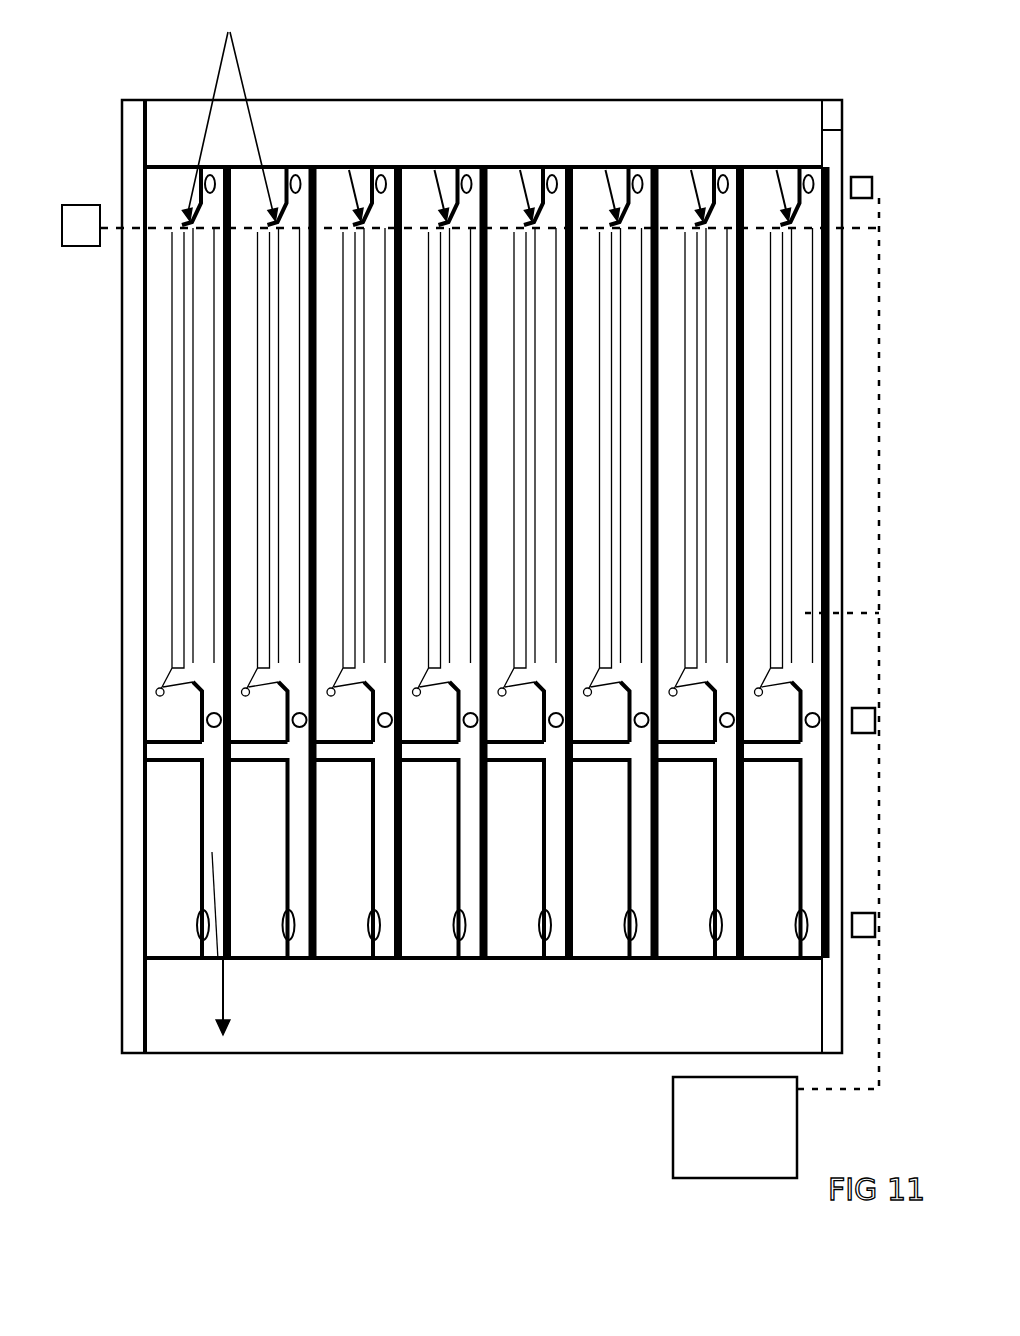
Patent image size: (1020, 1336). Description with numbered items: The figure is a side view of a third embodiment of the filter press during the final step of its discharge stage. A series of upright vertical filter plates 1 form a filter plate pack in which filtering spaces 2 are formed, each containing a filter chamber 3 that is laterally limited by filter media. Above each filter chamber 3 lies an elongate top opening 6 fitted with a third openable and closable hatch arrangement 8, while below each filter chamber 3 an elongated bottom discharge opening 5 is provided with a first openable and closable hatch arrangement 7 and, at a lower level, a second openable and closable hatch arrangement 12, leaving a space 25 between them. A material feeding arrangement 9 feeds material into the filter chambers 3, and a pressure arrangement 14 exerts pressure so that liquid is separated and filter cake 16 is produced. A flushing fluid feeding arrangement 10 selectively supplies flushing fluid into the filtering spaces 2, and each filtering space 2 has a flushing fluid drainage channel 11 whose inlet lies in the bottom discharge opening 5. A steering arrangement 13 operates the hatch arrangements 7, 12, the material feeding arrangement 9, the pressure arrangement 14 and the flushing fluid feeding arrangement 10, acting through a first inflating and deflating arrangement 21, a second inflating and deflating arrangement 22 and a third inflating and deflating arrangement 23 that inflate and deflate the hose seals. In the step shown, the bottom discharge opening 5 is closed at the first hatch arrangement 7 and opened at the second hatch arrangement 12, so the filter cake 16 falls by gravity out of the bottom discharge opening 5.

The filter plates 1 is at (229, 110).
The filtering space 2 is at (288, 243).
The filter chamber 3 is at (210, 335).
The elongated bottom discharge opening 5 is at (215, 938).
The elongate top opening 6 is at (387, 168).
The first openable and closable hatch arrangement 7 is at (212, 722).
The third openable and closable hatch arrangement 8 is at (553, 178).
The material feeding arrangement 9 is at (730, 130).
The flushing fluid feeding arrangement 10 is at (470, 225).
The flushing fluid drainage channel 11 is at (175, 752).
The second openable and closable hatch arrangement 12 is at (203, 927).
The steering arrangement 13 is at (752, 1143).
The pressure arrangement 14 is at (175, 578).
The filter cake 16 is at (225, 990).
The first inflating and deflating arrangement 21 is at (868, 720).
The second inflating and deflating arrangement 22 is at (866, 178).
The third inflating and deflating arrangement 23 is at (870, 932).
The space 25 is at (640, 860).